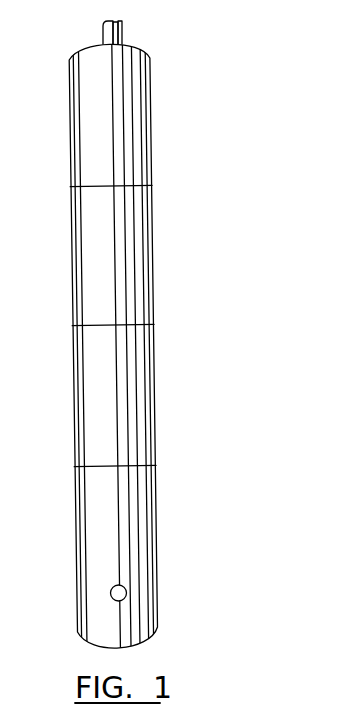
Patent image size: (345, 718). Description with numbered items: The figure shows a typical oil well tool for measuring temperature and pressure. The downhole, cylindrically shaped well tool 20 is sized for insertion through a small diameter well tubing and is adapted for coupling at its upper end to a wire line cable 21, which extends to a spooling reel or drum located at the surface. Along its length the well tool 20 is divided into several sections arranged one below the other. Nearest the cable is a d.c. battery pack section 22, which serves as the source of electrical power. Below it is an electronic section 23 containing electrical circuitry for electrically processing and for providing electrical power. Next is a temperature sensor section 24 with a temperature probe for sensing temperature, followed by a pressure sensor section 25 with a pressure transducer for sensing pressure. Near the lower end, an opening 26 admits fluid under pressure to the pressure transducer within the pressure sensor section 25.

The well tool 20 is at (155, 353).
The wire line cable 21 is at (122, 32).
The d.c. battery pack section 22 is at (153, 145).
The electronic section 23 is at (155, 260).
The temperature sensor section 24 is at (155, 429).
The pressure sensor section 25 is at (155, 487).
The opening 26 is at (126, 589).